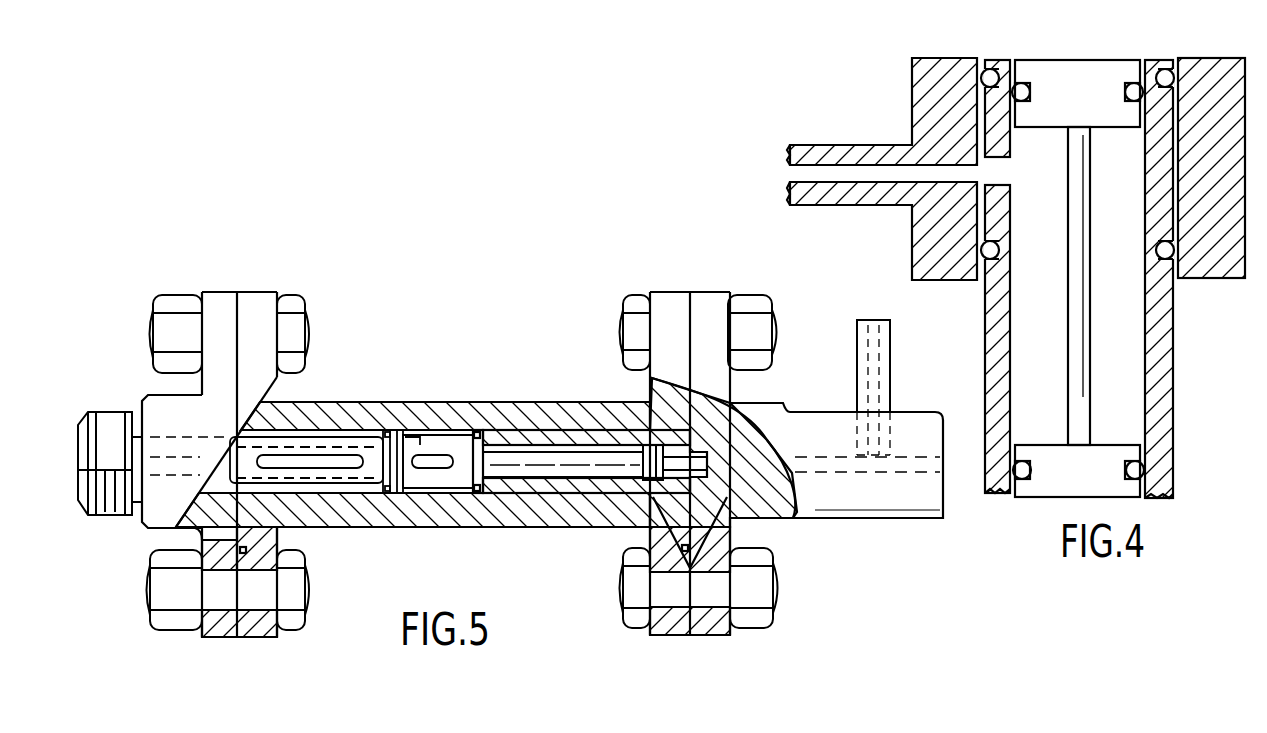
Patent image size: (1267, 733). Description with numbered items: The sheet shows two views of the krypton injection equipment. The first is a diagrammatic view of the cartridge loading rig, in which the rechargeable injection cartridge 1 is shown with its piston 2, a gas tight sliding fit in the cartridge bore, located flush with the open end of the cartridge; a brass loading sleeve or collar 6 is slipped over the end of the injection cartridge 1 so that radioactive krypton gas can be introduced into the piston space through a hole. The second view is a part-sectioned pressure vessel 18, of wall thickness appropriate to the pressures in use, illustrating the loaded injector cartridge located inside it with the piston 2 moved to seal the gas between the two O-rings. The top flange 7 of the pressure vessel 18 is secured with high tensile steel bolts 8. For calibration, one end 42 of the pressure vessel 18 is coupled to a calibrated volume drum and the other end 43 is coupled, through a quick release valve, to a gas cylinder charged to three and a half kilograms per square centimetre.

In FIG. 4, the rechargeable injection cartridge 1 is at (1168, 347).
In FIG. 4, the piston 2 is at (1095, 65).
In FIG. 5, the piston 2 is at (537, 465).
In FIG. 4, the brass loading sleeve or collar 6 is at (1216, 67).
In FIG. 5, the top flange 7 is at (830, 410).
In FIG. 5, the high tensile steel bolts 8 is at (760, 303).
In FIG. 5, the pressure vessel 18 is at (449, 385).
In FIG. 5, the one end of the pressure vessel 42 is at (110, 435).
In FIG. 5, the other end of the pressure vessel 43 is at (944, 413).